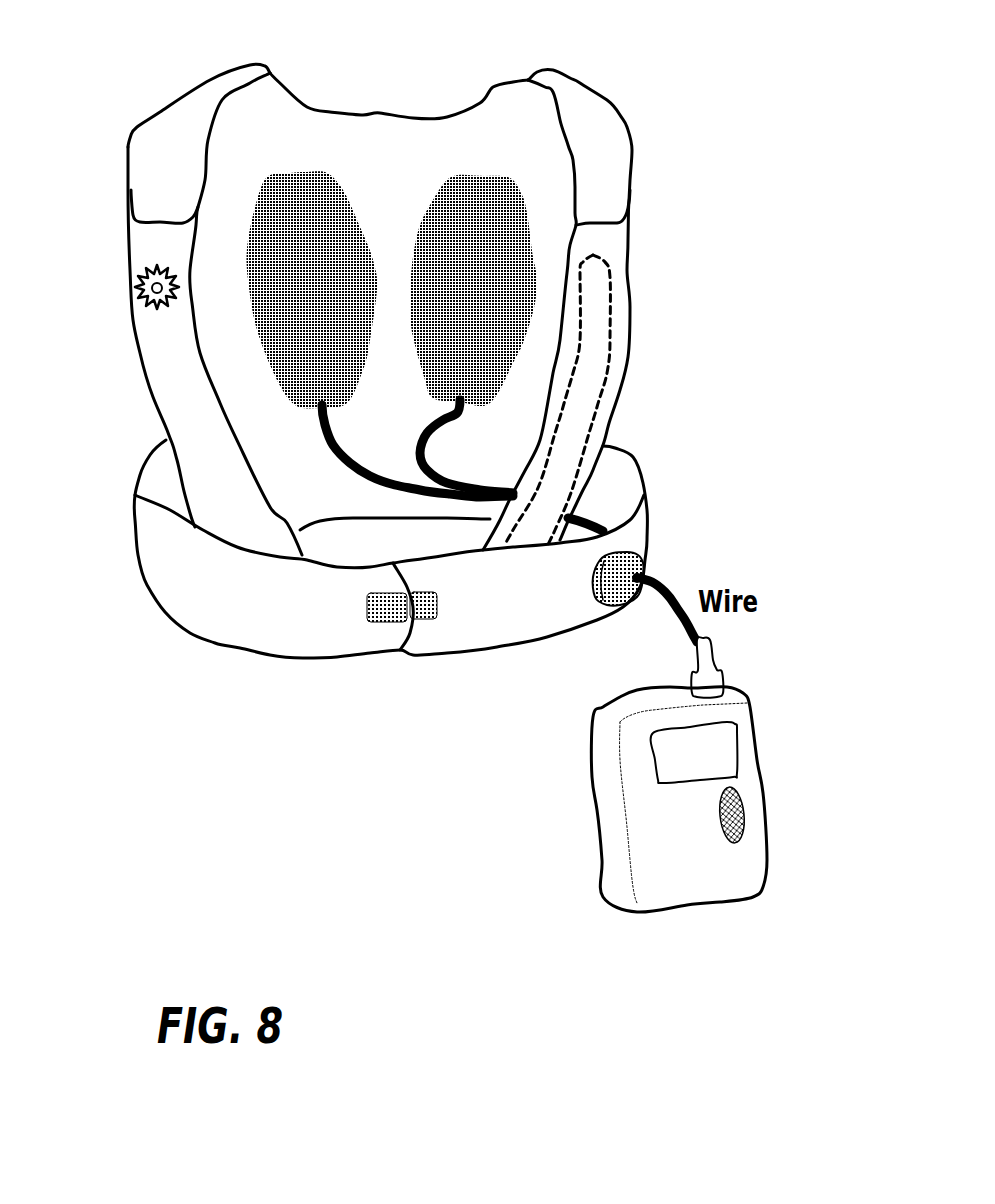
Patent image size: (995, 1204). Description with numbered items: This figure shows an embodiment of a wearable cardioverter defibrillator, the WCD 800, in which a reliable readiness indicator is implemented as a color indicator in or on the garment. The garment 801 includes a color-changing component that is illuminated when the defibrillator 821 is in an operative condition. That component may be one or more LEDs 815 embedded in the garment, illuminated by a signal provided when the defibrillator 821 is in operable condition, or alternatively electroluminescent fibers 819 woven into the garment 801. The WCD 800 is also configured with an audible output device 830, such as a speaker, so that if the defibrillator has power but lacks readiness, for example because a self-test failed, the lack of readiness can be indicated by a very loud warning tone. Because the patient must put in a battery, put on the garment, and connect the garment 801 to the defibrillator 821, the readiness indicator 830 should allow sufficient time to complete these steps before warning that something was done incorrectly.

The WCD 800 is at (692, 108).
The garment 801 is at (167, 620).
The LEDs 815 is at (153, 310).
The electroluminescent fibers 819 is at (612, 325).
The defibrillator 821 is at (598, 837).
The audible output device 830 is at (745, 817).